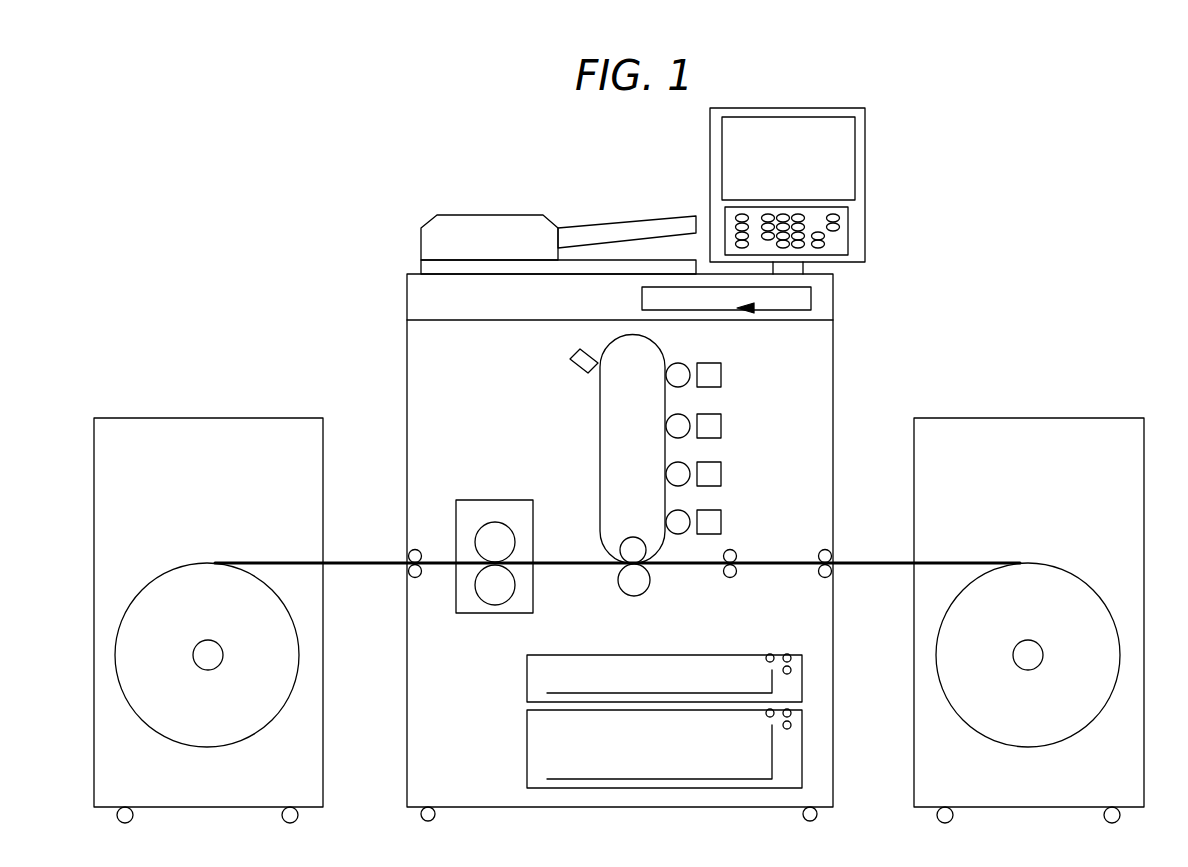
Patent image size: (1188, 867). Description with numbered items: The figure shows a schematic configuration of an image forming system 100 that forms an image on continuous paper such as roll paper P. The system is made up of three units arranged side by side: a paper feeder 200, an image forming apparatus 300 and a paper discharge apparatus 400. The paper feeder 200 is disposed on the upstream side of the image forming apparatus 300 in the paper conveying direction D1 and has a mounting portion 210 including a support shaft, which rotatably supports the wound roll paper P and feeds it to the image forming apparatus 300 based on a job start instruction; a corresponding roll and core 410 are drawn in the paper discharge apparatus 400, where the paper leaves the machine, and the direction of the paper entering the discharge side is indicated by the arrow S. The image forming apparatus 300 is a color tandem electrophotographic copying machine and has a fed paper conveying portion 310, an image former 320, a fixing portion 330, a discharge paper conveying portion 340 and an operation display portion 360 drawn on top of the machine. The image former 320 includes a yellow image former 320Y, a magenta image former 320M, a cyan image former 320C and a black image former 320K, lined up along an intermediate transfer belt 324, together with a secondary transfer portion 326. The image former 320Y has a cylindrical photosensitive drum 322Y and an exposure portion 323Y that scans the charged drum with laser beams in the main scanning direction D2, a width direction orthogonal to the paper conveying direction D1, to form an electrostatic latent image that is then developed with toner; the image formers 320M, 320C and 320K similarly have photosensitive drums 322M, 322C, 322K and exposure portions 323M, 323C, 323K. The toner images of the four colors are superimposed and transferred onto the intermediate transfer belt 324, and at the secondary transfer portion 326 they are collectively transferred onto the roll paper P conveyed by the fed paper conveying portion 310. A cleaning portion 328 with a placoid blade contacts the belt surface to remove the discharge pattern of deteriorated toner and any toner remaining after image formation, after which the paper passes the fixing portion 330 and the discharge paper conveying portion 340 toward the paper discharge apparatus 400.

The image forming system 100 is at (1034, 163).
The paper feeder 200 is at (1027, 418).
The mounting portion 210 is at (1038, 653).
The image forming apparatus 300 is at (522, 213).
The fed paper conveying portion 310 is at (775, 585).
The image former 320 is at (575, 404).
The yellow image former 320Y is at (740, 375).
The magenta image former 320M is at (740, 426).
The cyan image former 320C is at (740, 477).
The black image former 320K is at (740, 530).
The photosensitive drum 322Y is at (666, 376).
The photosensitive drum 322M is at (666, 426).
The photosensitive drum 322C is at (666, 474).
The photosensitive drum 322K is at (666, 520).
The exposure portion 323Y is at (721, 364).
The exposure portion 323M is at (721, 415).
The exposure portion 323C is at (721, 464).
The exposure portion 323K is at (721, 512).
The intermediate transfer belt 324 is at (600, 445).
The secondary transfer portion 326 is at (603, 578).
The cleaning portion 328 is at (568, 356).
The fixing portion 330 is at (488, 500).
The discharge paper conveying portion 340 is at (432, 538).
The operation display portion 360 is at (865, 148).
The paper discharge apparatus 400 is at (207, 418).
The winding roll 410 is at (217, 653).
The roll paper P is at (177, 571).
The direction of sheet S is at (365, 506).
The paper conveying direction D1 is at (572, 842).
The main scanning direction D2 is at (653, 835).